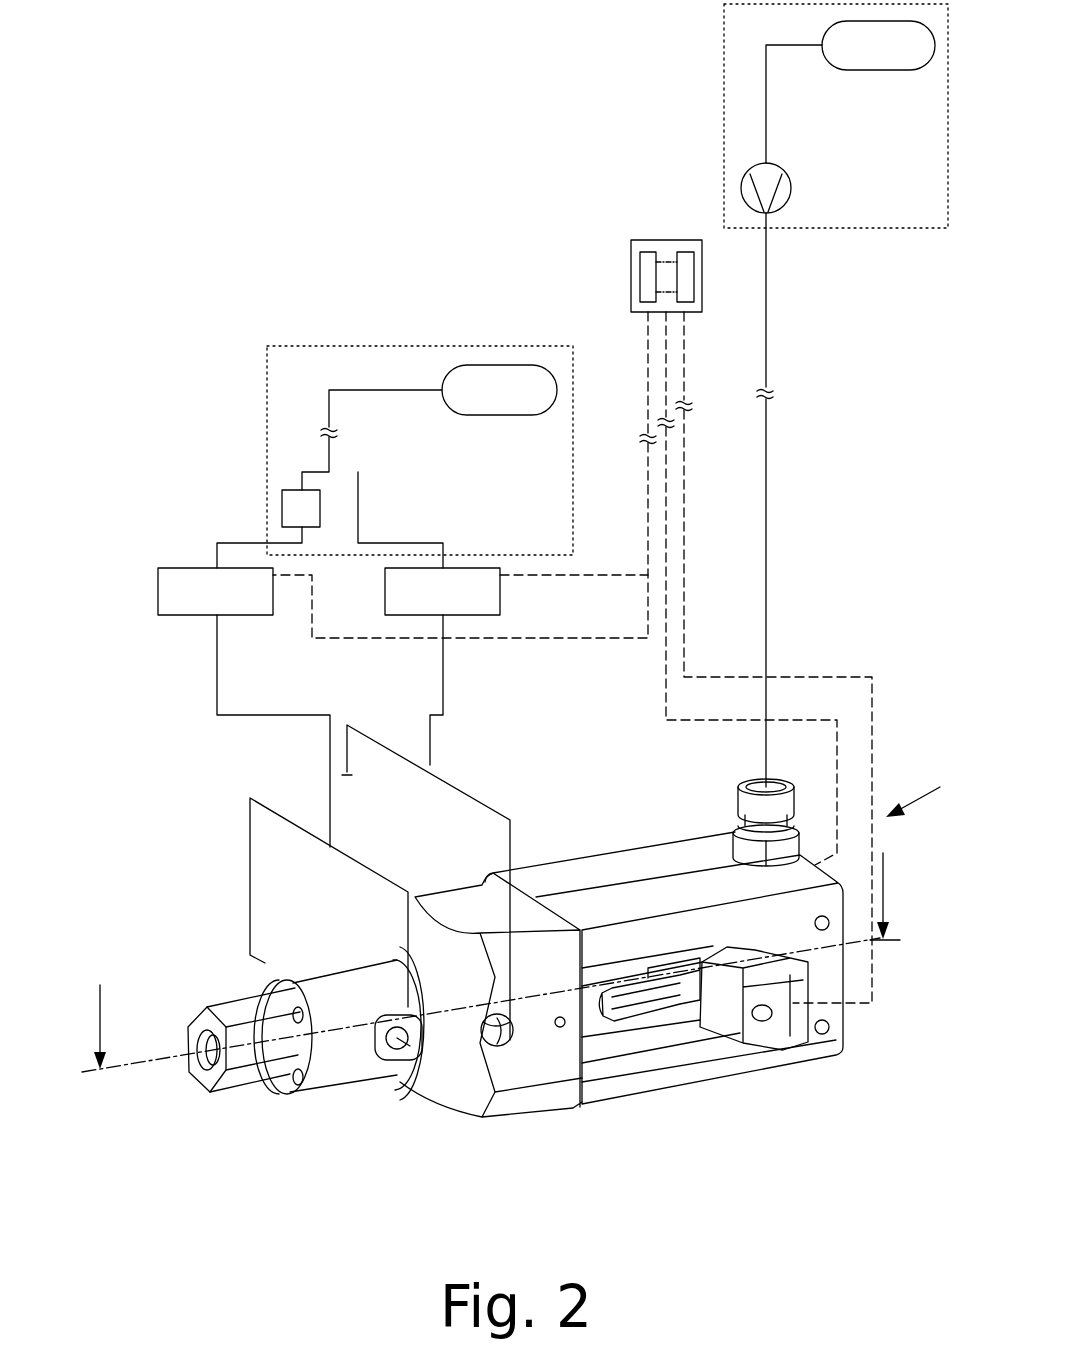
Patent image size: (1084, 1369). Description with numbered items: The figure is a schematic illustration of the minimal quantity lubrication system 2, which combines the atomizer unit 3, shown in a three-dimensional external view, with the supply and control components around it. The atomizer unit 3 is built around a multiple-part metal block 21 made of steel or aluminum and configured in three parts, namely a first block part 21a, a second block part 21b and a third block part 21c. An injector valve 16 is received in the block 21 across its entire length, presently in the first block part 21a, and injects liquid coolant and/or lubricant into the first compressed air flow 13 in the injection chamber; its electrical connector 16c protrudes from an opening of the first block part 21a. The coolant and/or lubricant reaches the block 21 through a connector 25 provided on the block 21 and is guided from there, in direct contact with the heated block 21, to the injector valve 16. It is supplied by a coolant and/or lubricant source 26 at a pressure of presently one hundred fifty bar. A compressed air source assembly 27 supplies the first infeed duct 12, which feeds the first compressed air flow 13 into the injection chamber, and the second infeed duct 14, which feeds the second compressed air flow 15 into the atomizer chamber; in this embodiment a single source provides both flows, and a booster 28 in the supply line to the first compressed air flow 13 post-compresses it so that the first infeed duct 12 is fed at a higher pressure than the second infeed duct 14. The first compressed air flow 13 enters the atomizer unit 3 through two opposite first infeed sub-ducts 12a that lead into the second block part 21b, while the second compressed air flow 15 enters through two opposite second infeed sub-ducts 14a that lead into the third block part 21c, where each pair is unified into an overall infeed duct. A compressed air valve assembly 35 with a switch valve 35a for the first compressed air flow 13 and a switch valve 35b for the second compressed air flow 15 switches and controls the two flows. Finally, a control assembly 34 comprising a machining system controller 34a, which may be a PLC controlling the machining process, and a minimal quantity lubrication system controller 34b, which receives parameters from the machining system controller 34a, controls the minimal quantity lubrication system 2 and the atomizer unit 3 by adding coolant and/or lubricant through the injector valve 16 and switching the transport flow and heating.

The minimal quantity lubrication system 2 is at (228, 42).
The atomizer unit 3 is at (222, 1150).
The first infeed duct 12 is at (513, 690).
The first compressed air flow 13 is at (458, 676).
The first infeed sub-ducts 12a is at (452, 785).
The second infeed duct 14 is at (193, 731).
The second compressed air flow 15 is at (205, 694).
The second infeed sub-ducts 14a is at (340, 852).
The injector valve 16 is at (749, 1071).
The electrical connector 16c is at (772, 1032).
The block 21 is at (744, 1125).
The first block part 21a is at (637, 1070).
The second block part 21b is at (538, 1062).
The third block part 21c is at (355, 1065).
The connector 25 is at (738, 803).
The coolant and/or lubricant source 26 is at (897, 173).
The compressed air source assembly 27 is at (360, 457).
The booster 28 is at (282, 503).
The control assembly 34 is at (605, 217).
The machining system controller 34a is at (640, 250).
The minimal quantity lubrication system controller 34b is at (684, 250).
The compressed air valve assembly 35 is at (272, 591).
The switch valve 35a is at (400, 616).
The switch valve 35b is at (192, 568).